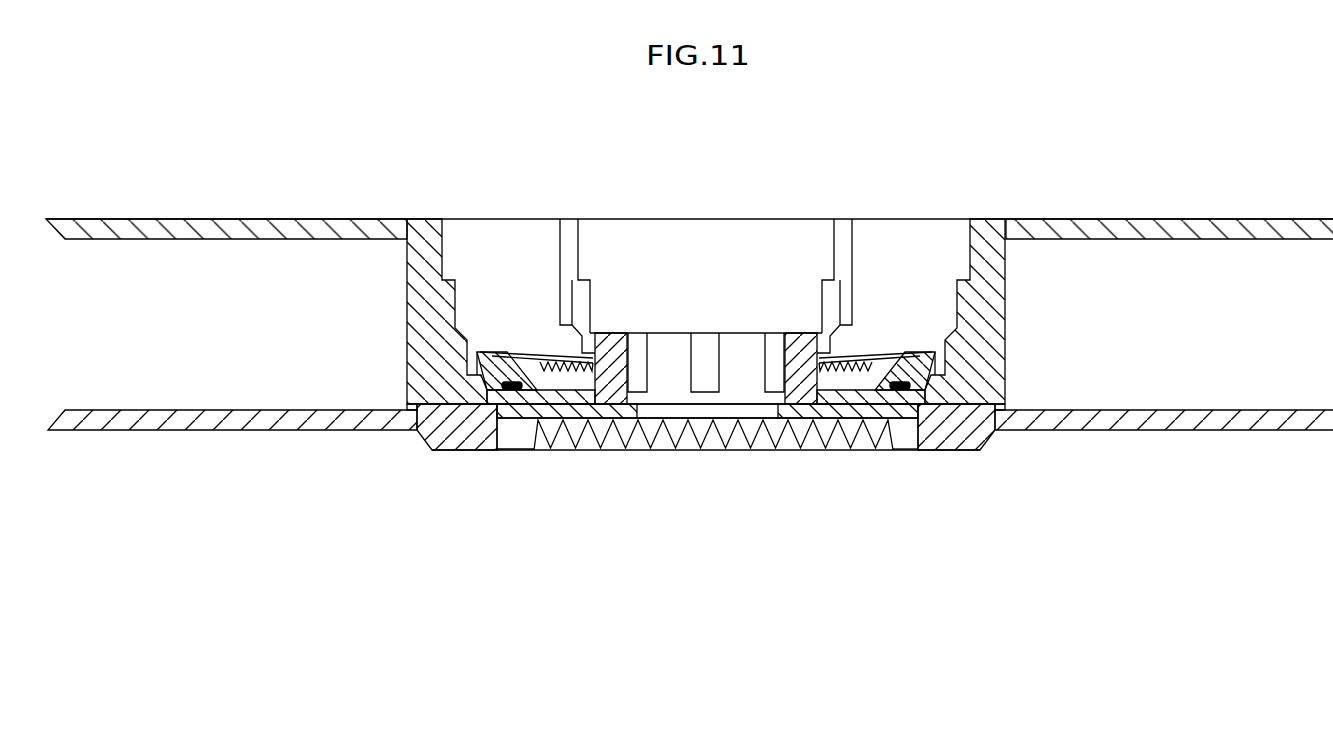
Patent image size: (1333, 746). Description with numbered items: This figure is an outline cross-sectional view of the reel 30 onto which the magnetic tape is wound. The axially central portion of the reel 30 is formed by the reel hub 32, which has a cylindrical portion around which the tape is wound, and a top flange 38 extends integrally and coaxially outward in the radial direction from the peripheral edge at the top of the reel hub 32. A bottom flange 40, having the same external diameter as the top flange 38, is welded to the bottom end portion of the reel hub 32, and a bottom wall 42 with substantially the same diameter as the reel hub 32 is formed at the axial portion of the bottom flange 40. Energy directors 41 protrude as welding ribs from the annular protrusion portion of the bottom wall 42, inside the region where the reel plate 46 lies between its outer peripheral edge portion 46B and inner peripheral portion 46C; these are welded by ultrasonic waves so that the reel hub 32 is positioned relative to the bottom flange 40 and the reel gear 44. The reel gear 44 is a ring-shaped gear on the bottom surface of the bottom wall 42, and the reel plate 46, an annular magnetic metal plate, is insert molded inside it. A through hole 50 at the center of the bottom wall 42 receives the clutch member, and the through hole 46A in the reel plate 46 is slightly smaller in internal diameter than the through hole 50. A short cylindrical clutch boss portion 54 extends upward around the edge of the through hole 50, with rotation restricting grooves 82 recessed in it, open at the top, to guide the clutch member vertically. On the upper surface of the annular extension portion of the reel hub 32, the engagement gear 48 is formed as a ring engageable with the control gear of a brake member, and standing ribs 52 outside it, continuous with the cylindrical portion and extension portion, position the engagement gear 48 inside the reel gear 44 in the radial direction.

The reel 30 is at (1208, 158).
The reel hub 32 is at (1008, 323).
The top flange 38 is at (1187, 240).
The bottom flange 40 is at (1224, 410).
The energy directors 41 is at (510, 383).
The bottom wall 42 is at (457, 422).
The reel gear 44 is at (592, 450).
The reel plate 46 is at (519, 422).
The through hole 46A is at (650, 445).
The outer peripheral edge portion 46B is at (903, 422).
The inner peripheral portion 46C is at (775, 425).
The engagement gear 48 is at (900, 384).
The through hole 50 is at (787, 405).
The standing ribs 52 is at (826, 300).
The clutch boss portion 54 is at (610, 348).
The rotation restricting grooves 82 is at (698, 355).